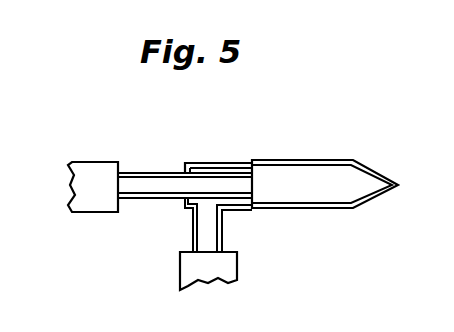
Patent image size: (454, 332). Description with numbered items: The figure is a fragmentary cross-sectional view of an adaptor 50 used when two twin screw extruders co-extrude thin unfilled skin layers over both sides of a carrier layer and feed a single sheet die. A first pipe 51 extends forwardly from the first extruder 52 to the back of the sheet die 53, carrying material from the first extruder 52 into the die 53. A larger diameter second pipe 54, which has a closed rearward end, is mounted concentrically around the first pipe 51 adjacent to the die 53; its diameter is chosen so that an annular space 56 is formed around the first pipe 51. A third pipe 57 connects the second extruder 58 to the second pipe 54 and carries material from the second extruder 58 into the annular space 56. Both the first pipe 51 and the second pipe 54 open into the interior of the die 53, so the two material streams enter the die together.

The adaptor 50 is at (188, 162).
The first pipe 51 is at (150, 200).
The first extruder 52 is at (97, 170).
The sheet die 53 is at (290, 160).
The second pipe 54 is at (232, 163).
The annular space 56 is at (203, 171).
The third pipe 57 is at (222, 230).
The second extruder 58 is at (237, 262).